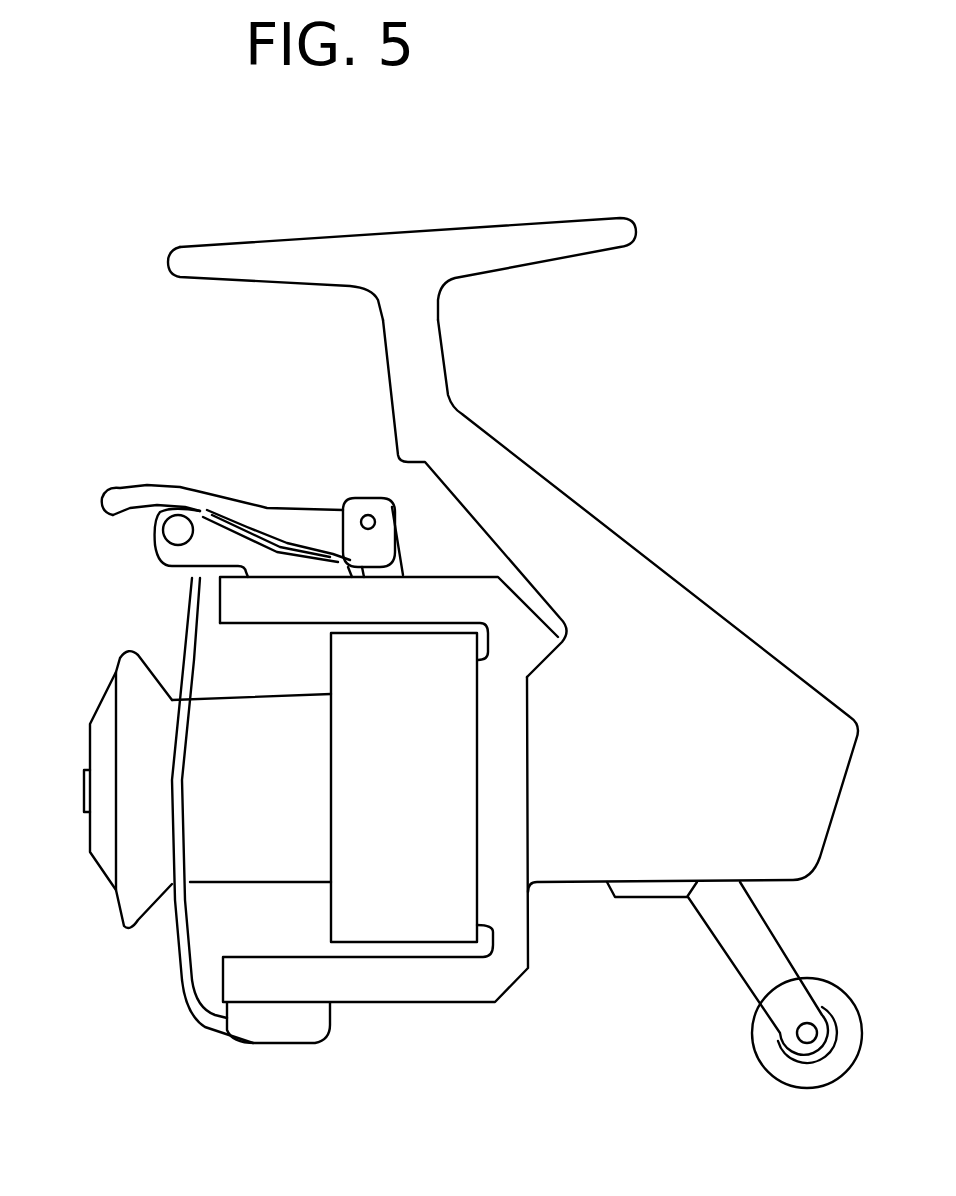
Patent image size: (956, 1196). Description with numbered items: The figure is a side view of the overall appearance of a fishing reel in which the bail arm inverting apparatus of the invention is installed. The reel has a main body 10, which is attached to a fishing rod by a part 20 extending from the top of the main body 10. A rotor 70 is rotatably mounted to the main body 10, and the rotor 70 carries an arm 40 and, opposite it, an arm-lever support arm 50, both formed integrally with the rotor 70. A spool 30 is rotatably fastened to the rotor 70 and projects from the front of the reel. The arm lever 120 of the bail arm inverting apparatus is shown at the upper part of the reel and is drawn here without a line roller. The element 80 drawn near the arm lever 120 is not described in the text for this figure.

The main body 10 is at (627, 527).
The part 20 is at (563, 228).
The spool 30 is at (184, 648).
The arm 40 is at (400, 980).
The arm-lever support arm 50 is at (440, 590).
The rotor 70 is at (512, 778).
The bail arm 80 is at (273, 513).
The arm lever 120 is at (165, 553).